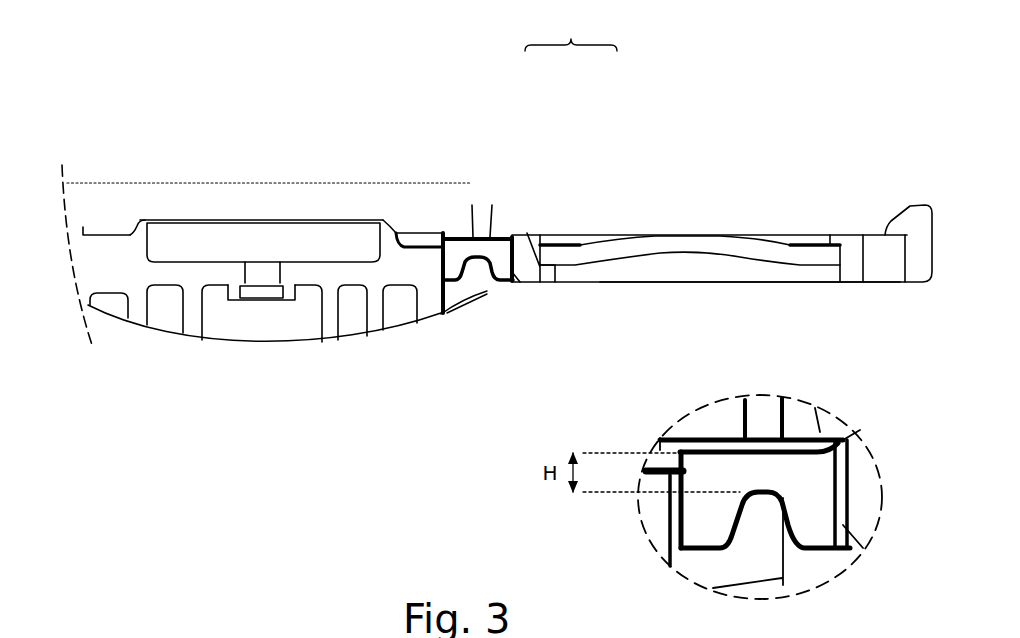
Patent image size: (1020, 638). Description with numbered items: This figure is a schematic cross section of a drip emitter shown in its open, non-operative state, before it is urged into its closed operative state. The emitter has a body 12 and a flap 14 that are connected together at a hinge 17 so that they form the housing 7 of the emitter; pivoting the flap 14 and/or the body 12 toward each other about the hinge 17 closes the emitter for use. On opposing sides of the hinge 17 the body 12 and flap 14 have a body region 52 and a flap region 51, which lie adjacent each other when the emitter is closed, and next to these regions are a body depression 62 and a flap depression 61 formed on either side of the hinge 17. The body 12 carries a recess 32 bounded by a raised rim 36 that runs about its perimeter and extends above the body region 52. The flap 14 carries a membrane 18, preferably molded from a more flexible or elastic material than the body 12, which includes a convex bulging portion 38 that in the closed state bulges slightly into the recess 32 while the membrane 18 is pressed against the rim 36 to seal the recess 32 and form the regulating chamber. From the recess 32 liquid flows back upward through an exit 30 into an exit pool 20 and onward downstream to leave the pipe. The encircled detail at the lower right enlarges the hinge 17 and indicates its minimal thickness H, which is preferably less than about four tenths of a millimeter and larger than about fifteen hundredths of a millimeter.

The housing 7 is at (571, 34).
The body 12 is at (385, 100).
The flap 14 is at (690, 110).
The raised rim 36 is at (143, 213).
The recess 32 is at (285, 237).
The body region 52 is at (430, 233).
The body depression 62 is at (472, 205).
The flap depression 61 is at (492, 205).
The flap region 51 is at (530, 233).
The convex bulging portion 38 is at (717, 235).
The membrane 18 is at (775, 293).
The hinge 17 is at (487, 293).
The exit 30 is at (265, 298).
The exit pool 20 is at (288, 318).